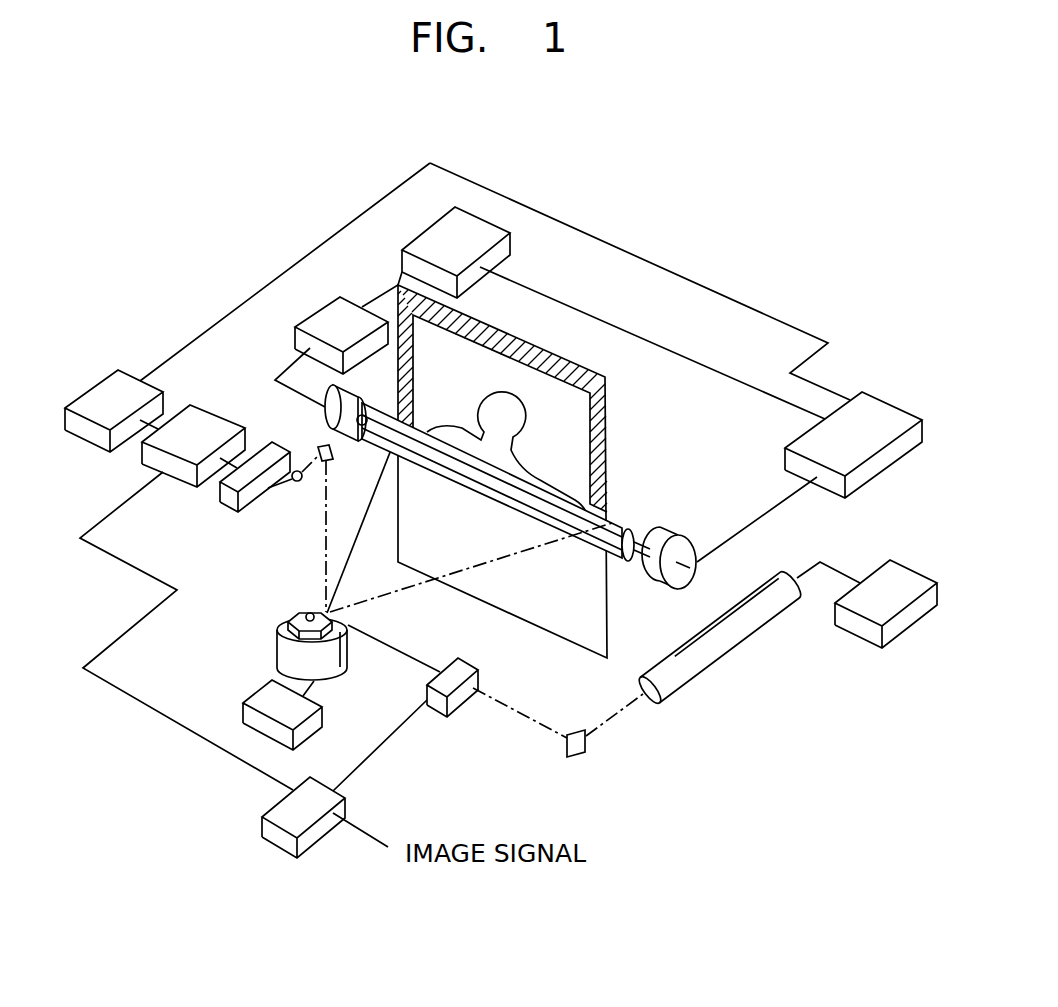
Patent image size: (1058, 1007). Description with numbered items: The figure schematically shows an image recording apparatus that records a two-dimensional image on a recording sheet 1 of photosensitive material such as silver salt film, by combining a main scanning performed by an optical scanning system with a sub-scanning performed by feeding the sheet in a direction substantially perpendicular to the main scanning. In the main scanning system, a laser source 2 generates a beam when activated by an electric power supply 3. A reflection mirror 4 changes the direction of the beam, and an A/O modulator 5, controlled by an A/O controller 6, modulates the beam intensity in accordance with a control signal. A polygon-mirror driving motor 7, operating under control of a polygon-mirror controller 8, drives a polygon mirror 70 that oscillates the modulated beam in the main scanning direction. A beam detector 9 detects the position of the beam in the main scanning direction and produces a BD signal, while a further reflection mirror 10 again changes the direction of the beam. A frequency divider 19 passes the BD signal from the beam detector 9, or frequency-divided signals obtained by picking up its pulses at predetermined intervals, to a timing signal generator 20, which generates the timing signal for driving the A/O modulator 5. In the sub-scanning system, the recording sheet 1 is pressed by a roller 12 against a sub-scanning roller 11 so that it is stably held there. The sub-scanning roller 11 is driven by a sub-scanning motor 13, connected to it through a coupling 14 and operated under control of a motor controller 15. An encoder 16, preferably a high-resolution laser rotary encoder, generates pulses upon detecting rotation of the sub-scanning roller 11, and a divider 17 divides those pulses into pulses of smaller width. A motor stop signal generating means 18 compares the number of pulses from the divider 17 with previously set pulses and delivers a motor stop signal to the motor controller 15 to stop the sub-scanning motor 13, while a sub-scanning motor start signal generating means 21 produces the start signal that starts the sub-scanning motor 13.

The recording sheet 1 is at (599, 411).
The laser source 2 is at (702, 662).
The electric power supply 3 is at (876, 608).
The reflection mirror 4 is at (590, 749).
The A/O modulator 5 is at (457, 697).
The A/O controller 6 is at (293, 817).
The polygon-mirror driving motor 7 is at (284, 659).
The polygon mirror 70 is at (303, 615).
The polygon-mirror controller 8 is at (268, 703).
The beam detector 9 is at (301, 483).
The reflection mirror 10 is at (332, 456).
The sub-scanning roller 11 is at (632, 532).
The roller 12 is at (622, 516).
The sub-scanning motor 13 is at (682, 538).
The coupling 14 is at (637, 560).
The motor controller 15 is at (868, 437).
The encoder 16 is at (326, 423).
The divider 17 is at (330, 316).
The motor stop signal generating means 18 is at (483, 228).
The frequency divider 19 is at (230, 500).
The timing signal generator 20 is at (207, 426).
The sub-scanning motor start signal generating means 21 is at (107, 388).